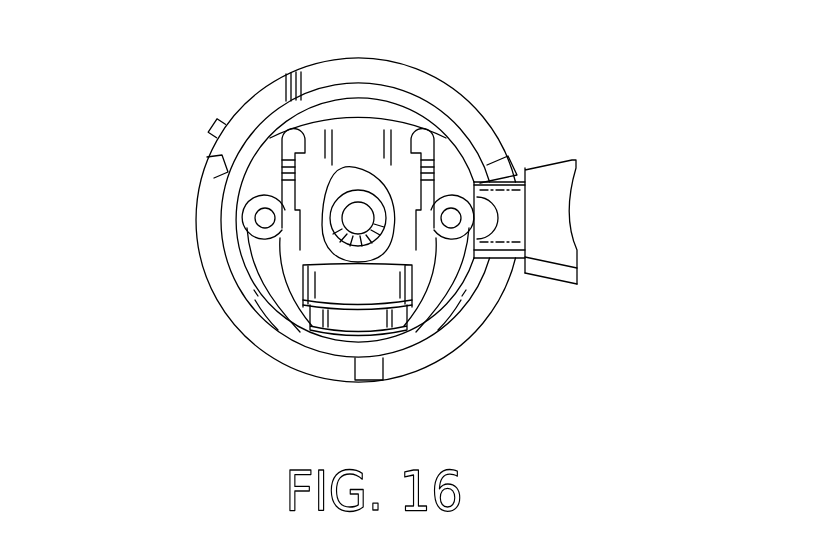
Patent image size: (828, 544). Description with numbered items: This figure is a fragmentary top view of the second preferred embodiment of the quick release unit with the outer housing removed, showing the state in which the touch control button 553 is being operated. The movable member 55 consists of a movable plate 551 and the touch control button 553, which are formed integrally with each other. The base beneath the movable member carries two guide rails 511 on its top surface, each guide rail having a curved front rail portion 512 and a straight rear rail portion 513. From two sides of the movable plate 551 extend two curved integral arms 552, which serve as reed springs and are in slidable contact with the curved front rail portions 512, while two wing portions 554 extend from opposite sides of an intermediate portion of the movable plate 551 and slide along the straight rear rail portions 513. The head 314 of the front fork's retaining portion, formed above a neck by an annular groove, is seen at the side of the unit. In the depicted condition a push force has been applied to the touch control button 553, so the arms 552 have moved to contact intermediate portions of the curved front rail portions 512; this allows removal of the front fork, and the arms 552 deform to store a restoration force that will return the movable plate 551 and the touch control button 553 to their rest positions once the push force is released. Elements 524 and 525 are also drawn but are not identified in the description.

The movable member 55 is at (298, 336).
The guide rails 511 is at (268, 183).
The curved front rail portion 512 is at (270, 322).
The straight rear rail portion 513 is at (217, 119).
The head 314 is at (495, 196).
The pivot boss 524 is at (352, 177).
The collar 525 is at (340, 264).
The movable plate 551 is at (370, 132).
The curved integral arms 552 is at (432, 327).
The touch control button 553 is at (363, 334).
The wing portions 554 is at (440, 175).